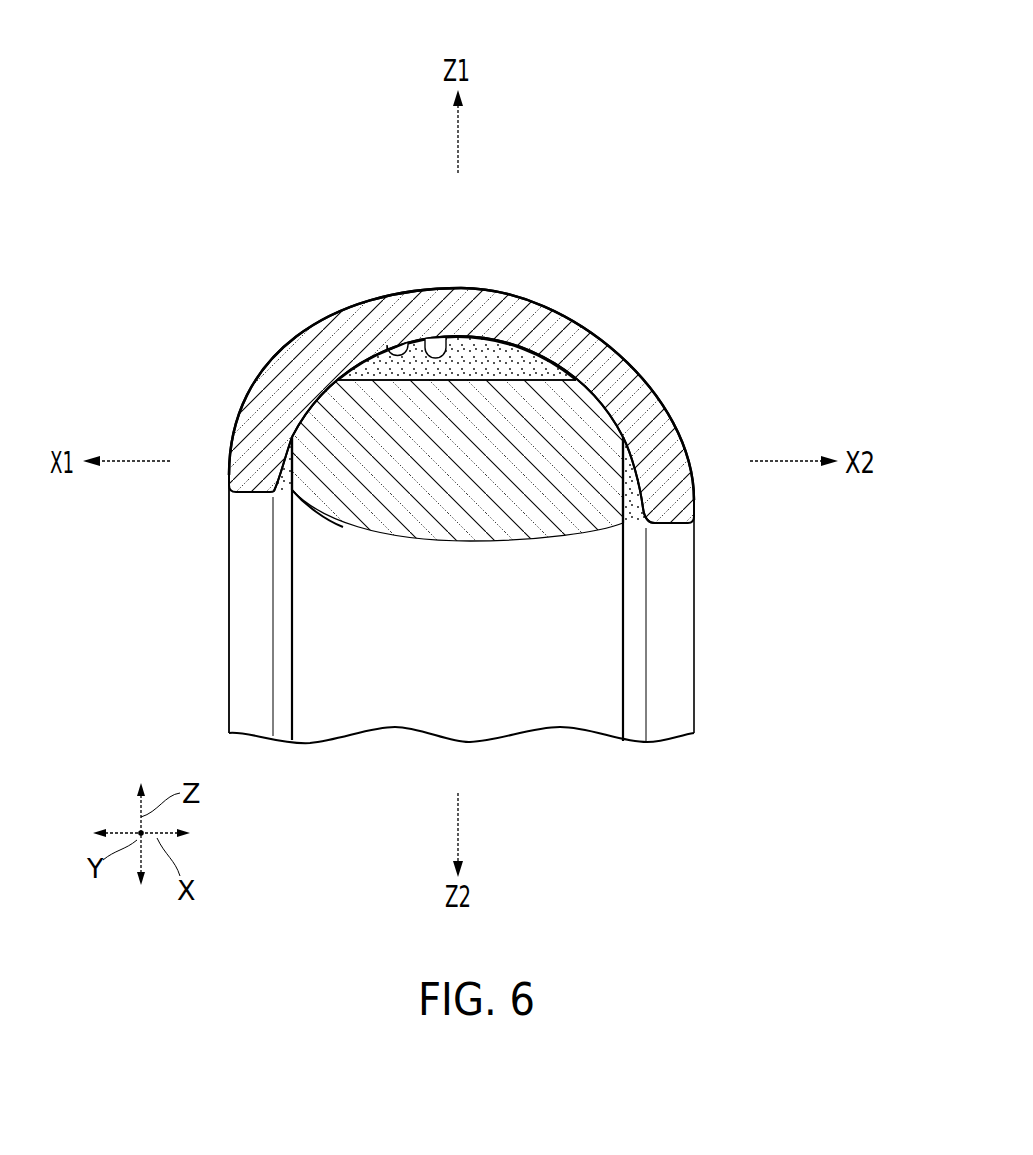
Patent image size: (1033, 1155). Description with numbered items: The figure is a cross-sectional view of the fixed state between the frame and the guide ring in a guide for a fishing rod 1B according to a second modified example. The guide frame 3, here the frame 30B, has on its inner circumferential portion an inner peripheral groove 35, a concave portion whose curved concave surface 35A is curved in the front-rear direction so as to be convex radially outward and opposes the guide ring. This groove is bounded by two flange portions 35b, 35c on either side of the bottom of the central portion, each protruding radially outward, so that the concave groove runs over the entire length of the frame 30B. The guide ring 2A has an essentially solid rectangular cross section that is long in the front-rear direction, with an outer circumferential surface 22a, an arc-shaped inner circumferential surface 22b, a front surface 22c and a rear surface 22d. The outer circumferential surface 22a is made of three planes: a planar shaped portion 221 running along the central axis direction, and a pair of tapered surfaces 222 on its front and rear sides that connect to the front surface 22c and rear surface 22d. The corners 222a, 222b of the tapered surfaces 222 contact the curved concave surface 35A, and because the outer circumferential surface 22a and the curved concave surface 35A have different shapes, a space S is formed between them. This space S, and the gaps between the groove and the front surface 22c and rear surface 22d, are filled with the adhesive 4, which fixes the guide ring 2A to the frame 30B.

The guide for a fishing rod 1B is at (663, 208).
The guide ring 2A is at (597, 473).
The guide frame 3 is at (457, 287).
The frame 30B is at (367, 303).
The inner peripheral groove 35 is at (387, 348).
The curved concave surface 35A is at (426, 343).
The flange portion 35b is at (250, 493).
The flange portion 35c is at (668, 525).
The adhesive 4 is at (498, 358).
The space S is at (451, 342).
The outer circumferential surface 22a is at (373, 380).
The inner circumferential surface 22b is at (368, 540).
The front surface 22c is at (292, 475).
The rear surface 22d is at (643, 495).
The planar shaped portion 221 is at (470, 378).
The tapered surface 222 is at (300, 410).
The corner of tapered surface 222a is at (342, 380).
The corner of tapered surface 222b is at (285, 431).